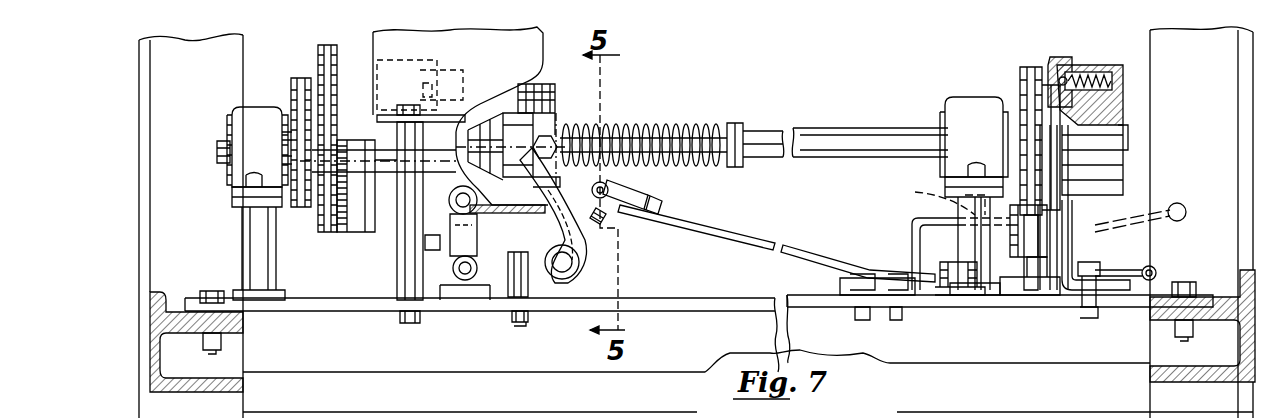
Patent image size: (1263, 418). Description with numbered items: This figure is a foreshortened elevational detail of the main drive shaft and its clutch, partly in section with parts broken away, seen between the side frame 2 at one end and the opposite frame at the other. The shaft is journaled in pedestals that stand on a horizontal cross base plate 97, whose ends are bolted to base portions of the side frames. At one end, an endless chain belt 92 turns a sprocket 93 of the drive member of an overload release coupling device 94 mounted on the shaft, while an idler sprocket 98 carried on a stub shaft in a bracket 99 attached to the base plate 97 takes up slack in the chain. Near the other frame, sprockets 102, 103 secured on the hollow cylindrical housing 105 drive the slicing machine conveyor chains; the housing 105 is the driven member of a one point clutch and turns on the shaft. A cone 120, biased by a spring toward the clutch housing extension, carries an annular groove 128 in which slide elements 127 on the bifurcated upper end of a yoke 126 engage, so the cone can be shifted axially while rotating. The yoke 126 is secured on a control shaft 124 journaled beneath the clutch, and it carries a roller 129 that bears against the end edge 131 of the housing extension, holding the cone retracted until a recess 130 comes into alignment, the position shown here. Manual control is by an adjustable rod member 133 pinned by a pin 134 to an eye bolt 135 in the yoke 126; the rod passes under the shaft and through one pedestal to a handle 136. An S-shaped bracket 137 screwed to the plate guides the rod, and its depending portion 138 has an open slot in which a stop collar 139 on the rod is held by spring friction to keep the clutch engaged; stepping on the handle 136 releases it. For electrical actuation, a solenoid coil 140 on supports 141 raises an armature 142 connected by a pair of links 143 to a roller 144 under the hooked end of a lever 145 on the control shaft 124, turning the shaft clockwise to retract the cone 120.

The side frame 2 is at (142, 364).
The endless chain belt 92 is at (1046, 64).
The sprocket 93 is at (1027, 68).
The coupling device 94 is at (1093, 66).
The cross base plate 97 is at (700, 306).
The idler sprocket 98 is at (1046, 272).
The bracket 99 is at (1069, 252).
The sprocket 102 is at (288, 140).
The sprocket 103 is at (322, 95).
The hollow cylindrical housing 105 is at (355, 216).
The cone 120 is at (513, 124).
The control shaft 124 is at (563, 270).
The yoke 126 is at (608, 142).
The slide elements 127 is at (558, 132).
The annular channel or groove 128 is at (532, 86).
The roller 129 is at (540, 208).
The recess 130 is at (545, 213).
The end edge 131 is at (547, 100).
The rod member 133 is at (744, 233).
The pin 134 is at (618, 193).
The eye bolt 135 is at (610, 219).
The handle 136 is at (1192, 204).
The S-shaped bracket 137 is at (910, 218).
The depending portion 138 is at (934, 194).
The stop collar 139 is at (943, 286).
The solenoid coil 140 is at (382, 44).
The supports 141 is at (426, 242).
The armature 142 is at (447, 124).
The links 143 is at (426, 246).
The roller 144 is at (462, 282).
The lever 145 is at (535, 272).